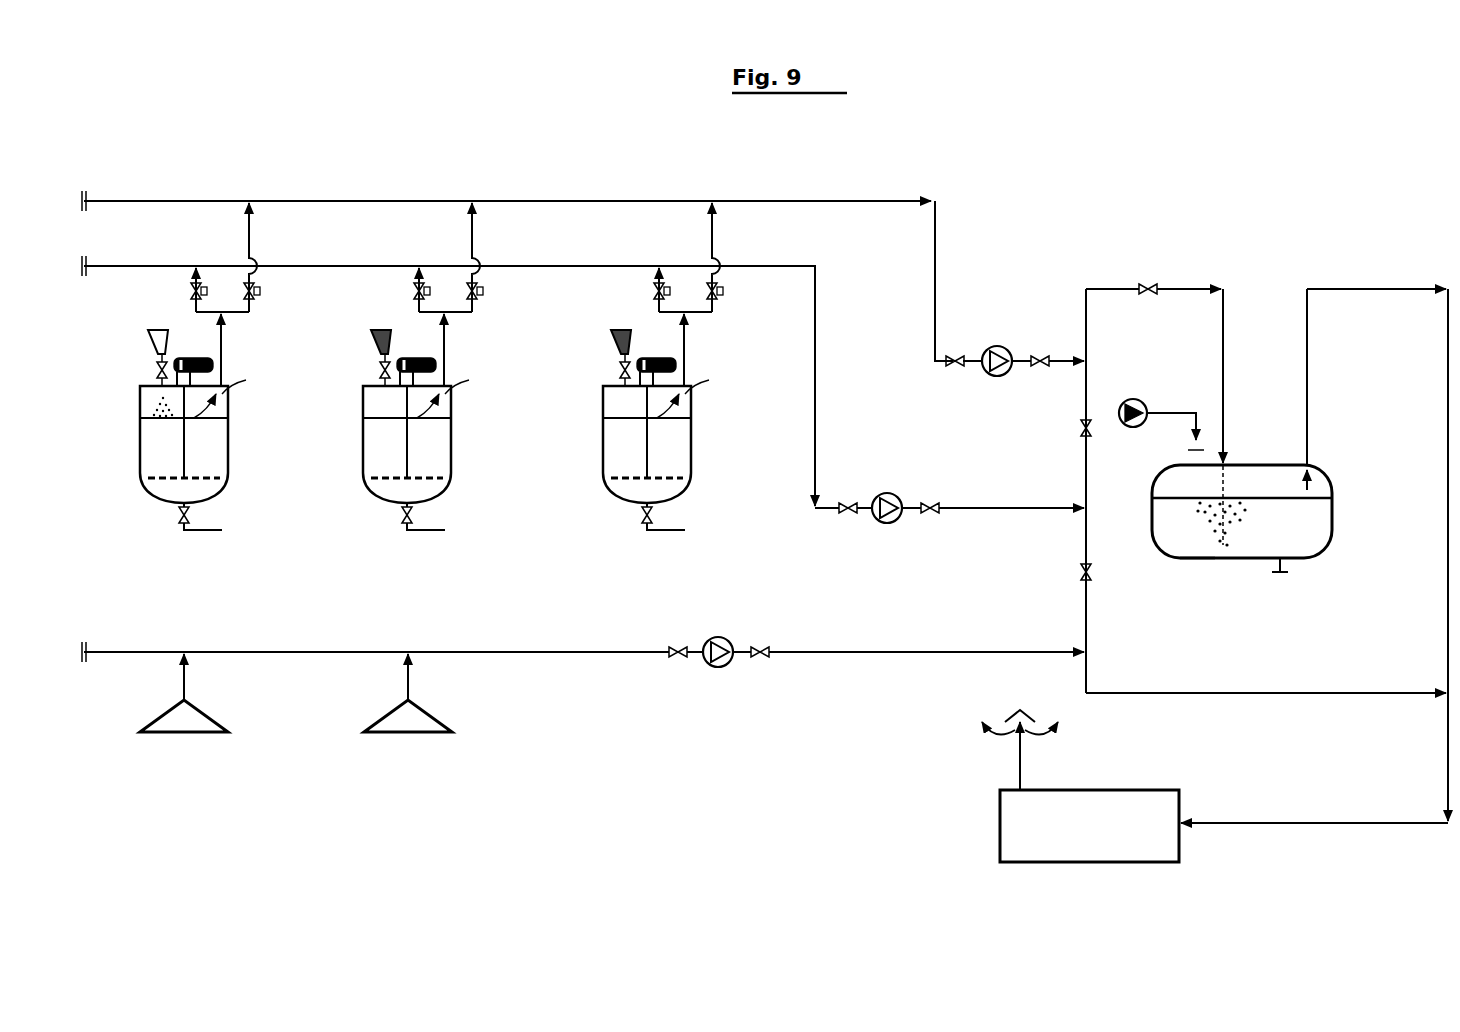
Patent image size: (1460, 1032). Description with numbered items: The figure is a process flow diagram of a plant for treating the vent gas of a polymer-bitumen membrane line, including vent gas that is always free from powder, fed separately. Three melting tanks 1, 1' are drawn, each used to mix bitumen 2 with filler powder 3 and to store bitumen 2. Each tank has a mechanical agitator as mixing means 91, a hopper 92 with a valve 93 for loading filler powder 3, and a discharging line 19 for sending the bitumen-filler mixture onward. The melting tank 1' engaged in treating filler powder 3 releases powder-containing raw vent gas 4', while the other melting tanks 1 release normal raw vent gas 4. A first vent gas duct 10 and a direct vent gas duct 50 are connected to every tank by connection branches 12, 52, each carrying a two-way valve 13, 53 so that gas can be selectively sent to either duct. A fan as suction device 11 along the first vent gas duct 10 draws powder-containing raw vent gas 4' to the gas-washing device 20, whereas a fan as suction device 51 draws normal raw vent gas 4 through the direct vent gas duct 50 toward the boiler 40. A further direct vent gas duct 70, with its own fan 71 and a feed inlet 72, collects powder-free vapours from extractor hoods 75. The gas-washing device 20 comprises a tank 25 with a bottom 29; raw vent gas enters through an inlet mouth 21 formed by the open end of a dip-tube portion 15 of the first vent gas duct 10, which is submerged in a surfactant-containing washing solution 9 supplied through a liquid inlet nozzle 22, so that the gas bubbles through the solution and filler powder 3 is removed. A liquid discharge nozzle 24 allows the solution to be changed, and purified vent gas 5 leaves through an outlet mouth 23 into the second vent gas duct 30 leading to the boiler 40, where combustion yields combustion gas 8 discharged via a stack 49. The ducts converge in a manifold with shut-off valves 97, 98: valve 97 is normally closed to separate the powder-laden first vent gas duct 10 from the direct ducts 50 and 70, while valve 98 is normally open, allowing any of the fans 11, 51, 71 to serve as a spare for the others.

The melting tank 1 is at (455, 527).
The melting tank 1' is at (107, 527).
The bitumen 2 is at (434, 444).
The filler powder 3 is at (150, 416).
The normal raw vent gas 4 is at (630, 366).
The powder-containing raw vent gas 4' is at (742, 433).
The purified vent gas 5 is at (1303, 480).
The combustion gas 8 is at (988, 732).
The washing solution 9 is at (1168, 540).
The first vent gas duct 10 is at (118, 200).
The suction device 11 is at (995, 378).
The connection branch 12 is at (505, 257).
The two-way valve 13 is at (505, 311).
The portion of first vent gas duct 15 is at (1236, 473).
The discharging line 19 is at (428, 546).
The gas-washing device 20 is at (1366, 428).
The inlet mouth 21 is at (1225, 550).
The liquid inlet nozzle 22 is at (1192, 451).
The outlet mouth 23 is at (1312, 465).
The liquid discharge nozzle 24 is at (1284, 570).
The tank 25 is at (1320, 478).
The bottom 29 is at (1190, 560).
The second vent gas duct 30 is at (1398, 288).
The boiler 40 is at (1106, 782).
The exhaust line 49 is at (1018, 762).
The direct vent gas duct 50 is at (118, 266).
The suction device 51 is at (884, 524).
The connection branch 52 is at (444, 270).
The two-way valve 53 is at (400, 292).
The further direct vent gas duct 70 is at (946, 654).
The suction device 71 is at (716, 669).
The feed inlet 72 is at (184, 676).
The extractor hood 75 is at (190, 734).
The mixing means 91 is at (210, 480).
The hopper 92 is at (366, 332).
The valve 93 is at (369, 365).
The shut-off valve 97 is at (1082, 434).
The shut-off valve 98 is at (1080, 573).